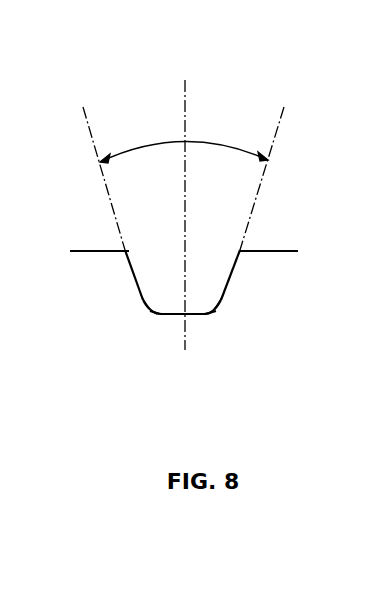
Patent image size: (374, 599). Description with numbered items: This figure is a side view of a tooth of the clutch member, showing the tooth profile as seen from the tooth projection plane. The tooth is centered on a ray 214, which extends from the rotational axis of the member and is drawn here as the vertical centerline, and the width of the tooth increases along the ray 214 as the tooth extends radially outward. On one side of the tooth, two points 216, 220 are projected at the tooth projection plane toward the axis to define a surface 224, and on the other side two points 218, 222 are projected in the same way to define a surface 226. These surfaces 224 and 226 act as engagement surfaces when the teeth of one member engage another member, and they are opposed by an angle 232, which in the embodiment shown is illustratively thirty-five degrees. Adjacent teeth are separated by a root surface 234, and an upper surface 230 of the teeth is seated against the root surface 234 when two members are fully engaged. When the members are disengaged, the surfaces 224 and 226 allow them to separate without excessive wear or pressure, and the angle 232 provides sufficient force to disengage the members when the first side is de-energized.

The ray 214 is at (183, 120).
The angle 232 is at (205, 142).
The point 220 is at (128, 250).
The point 222 is at (241, 250).
The root surface 234 is at (87, 253).
The surface 224 is at (141, 286).
The surface 226 is at (229, 286).
The point 216 is at (153, 314).
The point 218 is at (210, 315).
The upper surface 230 is at (196, 316).